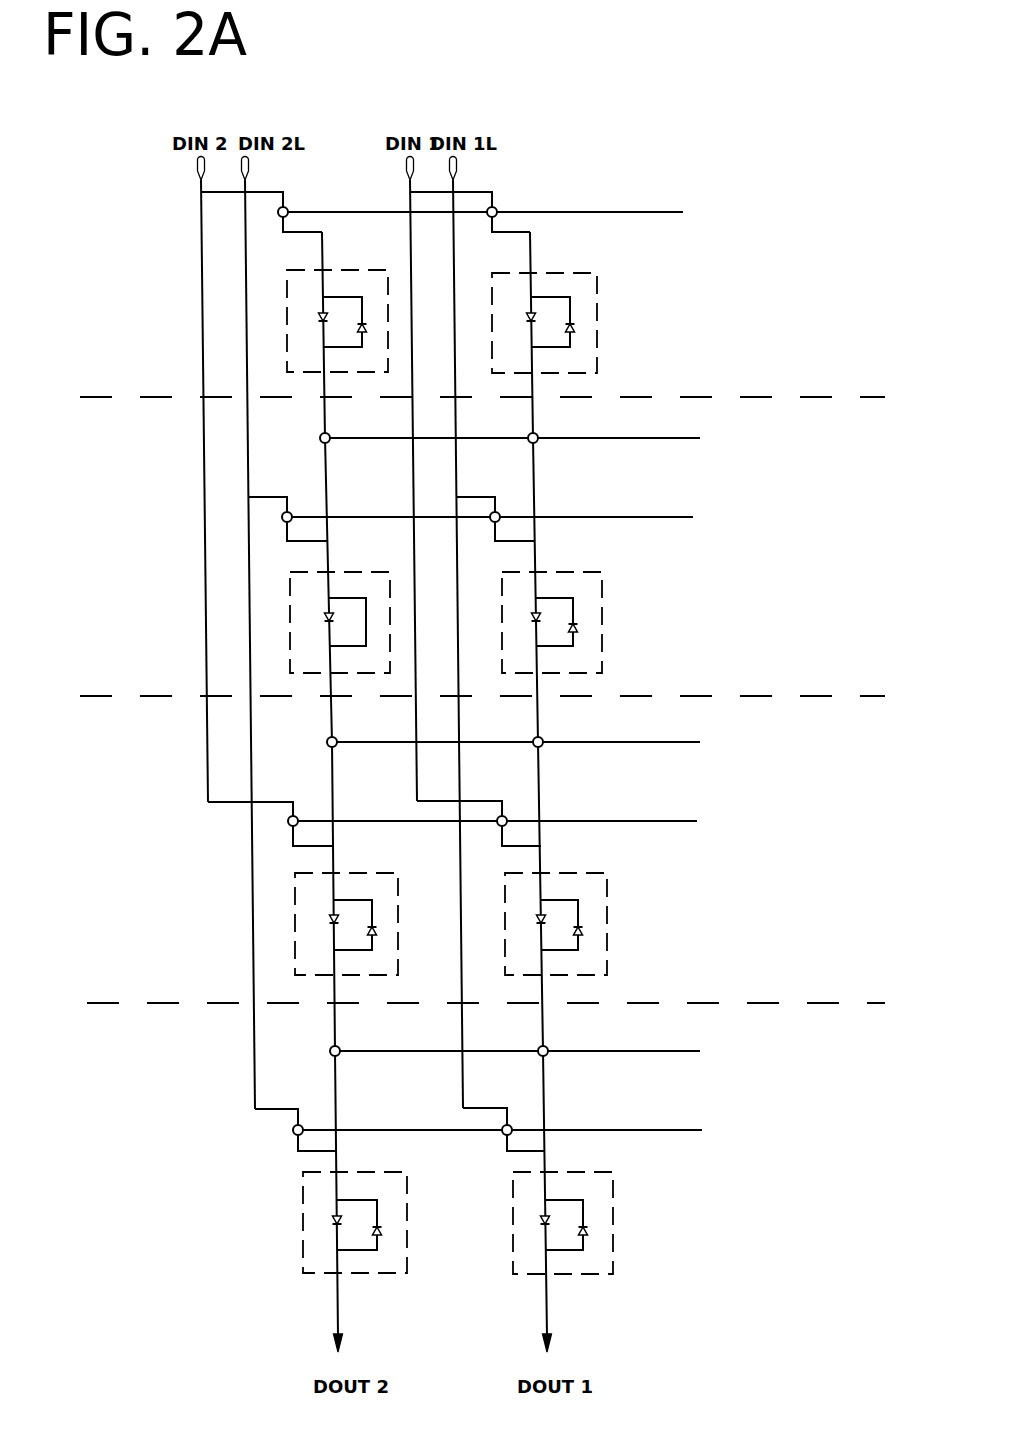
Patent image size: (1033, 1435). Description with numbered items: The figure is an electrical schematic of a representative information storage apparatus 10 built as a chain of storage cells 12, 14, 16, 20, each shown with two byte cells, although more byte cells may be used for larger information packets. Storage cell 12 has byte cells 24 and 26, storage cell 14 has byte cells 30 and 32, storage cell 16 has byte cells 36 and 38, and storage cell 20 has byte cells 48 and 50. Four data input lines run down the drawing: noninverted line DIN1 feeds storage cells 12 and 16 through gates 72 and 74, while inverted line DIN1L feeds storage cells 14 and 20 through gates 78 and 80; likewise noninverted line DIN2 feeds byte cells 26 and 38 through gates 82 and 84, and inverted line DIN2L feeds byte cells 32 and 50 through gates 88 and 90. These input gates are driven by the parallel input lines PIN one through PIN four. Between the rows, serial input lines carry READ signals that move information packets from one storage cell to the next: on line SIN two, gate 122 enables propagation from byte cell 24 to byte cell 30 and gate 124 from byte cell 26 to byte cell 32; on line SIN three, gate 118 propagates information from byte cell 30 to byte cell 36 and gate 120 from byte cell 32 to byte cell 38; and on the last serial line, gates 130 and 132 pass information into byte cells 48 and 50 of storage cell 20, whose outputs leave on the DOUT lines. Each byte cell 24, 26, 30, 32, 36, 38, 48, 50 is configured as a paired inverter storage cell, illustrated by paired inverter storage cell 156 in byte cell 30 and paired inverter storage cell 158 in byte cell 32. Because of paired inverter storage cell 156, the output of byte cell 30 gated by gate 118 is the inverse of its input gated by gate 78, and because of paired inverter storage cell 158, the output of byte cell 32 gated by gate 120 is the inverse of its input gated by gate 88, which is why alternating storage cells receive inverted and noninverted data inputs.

The information storage apparatus 10 is at (682, 137).
The storage cell 12 is at (133, 268).
The storage cell 14 is at (134, 529).
The storage cell 16 is at (134, 797).
The storage cell 20 is at (164, 1100).
The byte cell 24 is at (580, 291).
The byte cell 26 is at (368, 284).
The byte cell 30 is at (589, 578).
The byte cell 32 is at (374, 582).
The byte cell 36 is at (588, 897).
The byte cell 38 is at (386, 885).
The byte cell 48 is at (600, 1210).
The byte cell 50 is at (315, 1238).
The gate 72 is at (497, 208).
The gate 74 is at (507, 815).
The gate 78 is at (500, 511).
The gate 80 is at (511, 1124).
The gate 82 is at (290, 210).
The gate 84 is at (298, 815).
The gate 88 is at (296, 511).
The gate 90 is at (295, 1133).
The gate 118 is at (542, 737).
The gate 120 is at (330, 736).
The gate 122 is at (536, 433).
The gate 124 is at (324, 432).
The gate 130 is at (546, 1045).
The gate 132 is at (333, 1045).
The paired inverter storage cell 156 is at (556, 620).
The paired inverter storage cell 158 is at (350, 635).